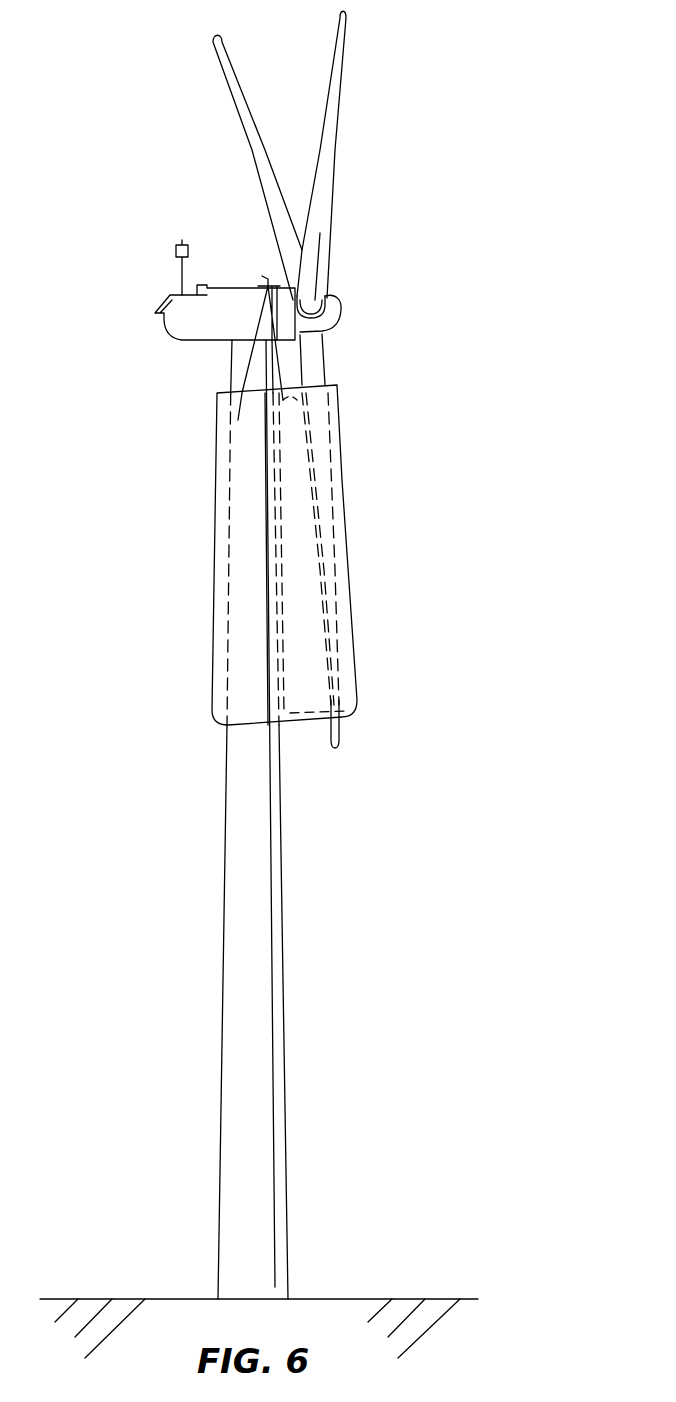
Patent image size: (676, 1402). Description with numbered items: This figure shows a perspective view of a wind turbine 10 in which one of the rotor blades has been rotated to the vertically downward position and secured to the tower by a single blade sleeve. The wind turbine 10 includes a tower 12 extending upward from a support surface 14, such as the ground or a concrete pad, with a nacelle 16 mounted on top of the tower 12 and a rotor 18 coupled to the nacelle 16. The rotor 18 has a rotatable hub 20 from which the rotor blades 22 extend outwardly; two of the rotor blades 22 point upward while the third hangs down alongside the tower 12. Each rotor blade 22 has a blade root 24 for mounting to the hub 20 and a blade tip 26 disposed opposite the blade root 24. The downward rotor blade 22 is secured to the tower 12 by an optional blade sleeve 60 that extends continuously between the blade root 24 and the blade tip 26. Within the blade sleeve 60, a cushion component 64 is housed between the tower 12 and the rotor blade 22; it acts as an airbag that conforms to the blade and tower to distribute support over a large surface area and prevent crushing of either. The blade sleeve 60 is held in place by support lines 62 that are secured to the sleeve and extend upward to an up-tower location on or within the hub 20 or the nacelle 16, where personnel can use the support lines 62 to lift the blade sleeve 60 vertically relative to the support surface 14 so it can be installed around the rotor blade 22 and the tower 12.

The wind turbine 10 is at (480, 141).
The tower 12 is at (243, 887).
The support surface 14 is at (383, 1299).
The nacelle 16 is at (192, 325).
The rotor 18 is at (342, 291).
The hub 20 is at (340, 317).
The rotor blade 22 is at (321, 131).
The blade root 24 is at (307, 340).
The blade tip 26 is at (333, 748).
The blade sleeve 60 is at (350, 527).
The support lines 62 is at (257, 322).
The cushion component 64 is at (295, 602).